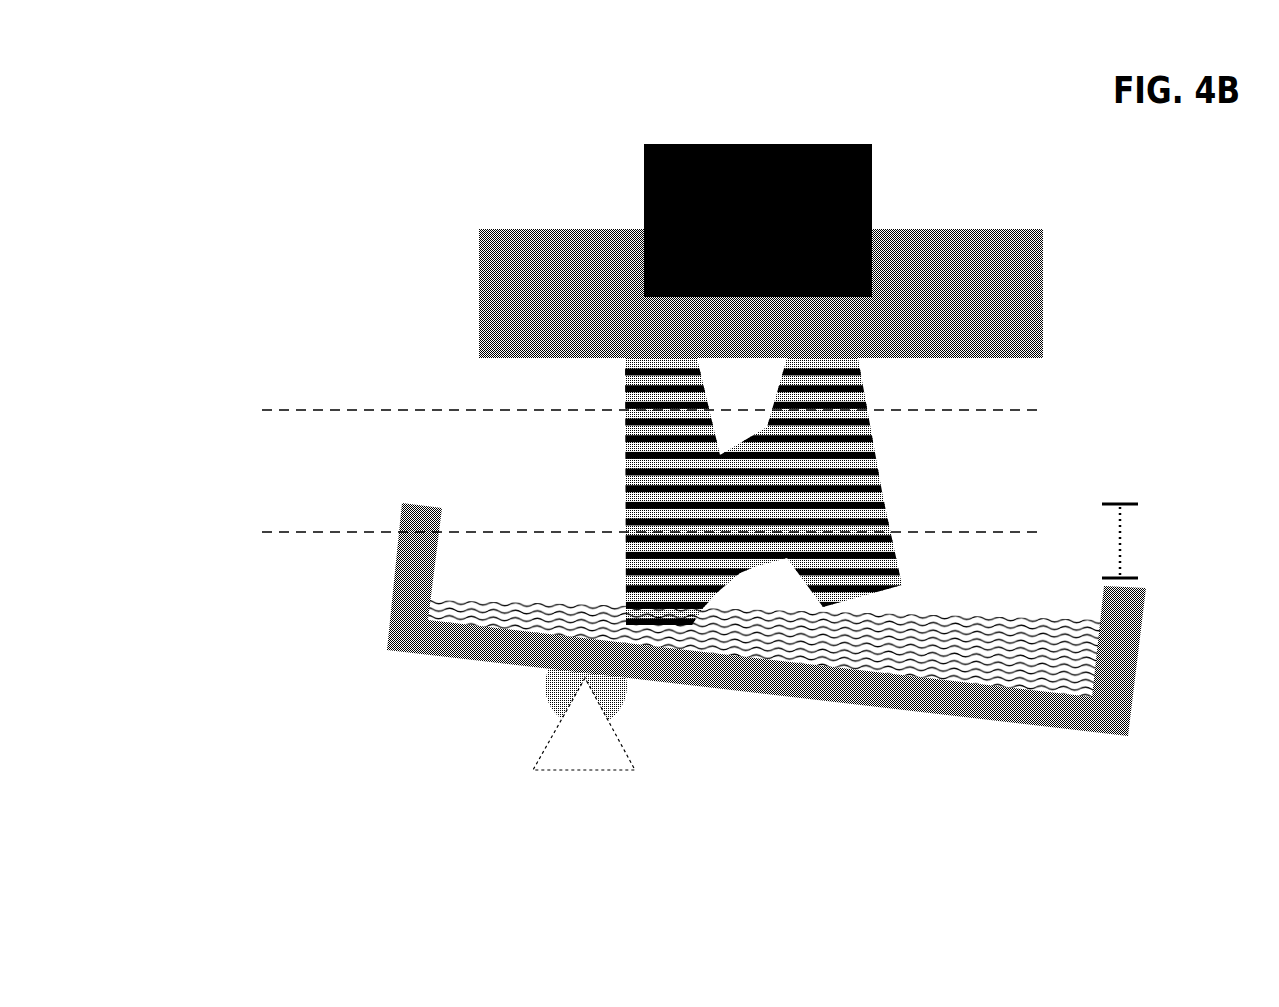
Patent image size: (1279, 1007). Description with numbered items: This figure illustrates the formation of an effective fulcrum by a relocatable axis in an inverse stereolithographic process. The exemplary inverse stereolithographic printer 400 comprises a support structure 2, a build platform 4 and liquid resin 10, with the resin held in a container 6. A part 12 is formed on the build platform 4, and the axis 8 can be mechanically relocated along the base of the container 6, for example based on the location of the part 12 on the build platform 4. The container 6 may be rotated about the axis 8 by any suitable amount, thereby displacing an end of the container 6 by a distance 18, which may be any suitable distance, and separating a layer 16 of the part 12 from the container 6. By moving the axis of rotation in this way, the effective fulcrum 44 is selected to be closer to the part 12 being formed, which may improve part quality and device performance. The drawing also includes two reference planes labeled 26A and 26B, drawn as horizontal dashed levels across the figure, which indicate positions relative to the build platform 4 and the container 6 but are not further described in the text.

The inverse stereolithographic printer 400 is at (263, 123).
The support structure 2 is at (657, 141).
The build platform 4 is at (478, 227).
The container 6 is at (420, 510).
The axis 8 is at (611, 698).
The liquid resin 10 is at (573, 626).
The part 12 is at (628, 491).
The layer 16 is at (675, 642).
The distance 18 is at (1104, 497).
The first level 26A is at (651, 401).
The second level 26B is at (651, 522).
The effective fulcrum 44 is at (596, 743).